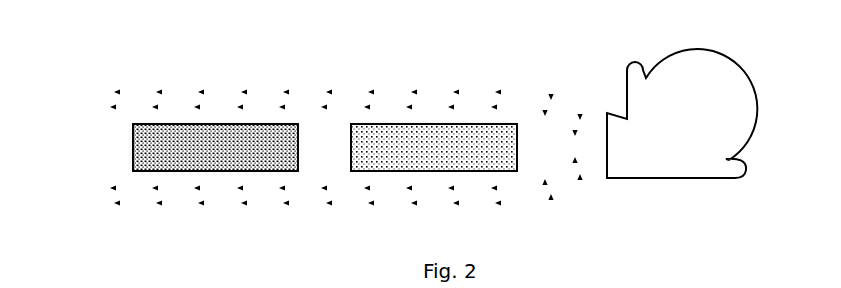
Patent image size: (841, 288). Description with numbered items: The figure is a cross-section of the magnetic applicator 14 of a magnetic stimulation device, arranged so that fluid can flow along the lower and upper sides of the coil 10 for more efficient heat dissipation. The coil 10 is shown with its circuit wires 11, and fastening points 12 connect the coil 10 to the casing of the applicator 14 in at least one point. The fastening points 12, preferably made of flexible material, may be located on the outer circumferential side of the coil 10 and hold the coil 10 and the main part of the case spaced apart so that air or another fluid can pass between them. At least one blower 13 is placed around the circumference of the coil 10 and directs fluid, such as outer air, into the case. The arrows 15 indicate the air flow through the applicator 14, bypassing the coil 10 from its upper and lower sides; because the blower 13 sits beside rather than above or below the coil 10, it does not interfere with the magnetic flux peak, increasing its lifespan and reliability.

The coil 10 is at (220, 173).
The circuit wires 11 is at (362, 133).
The fastening points 12 is at (85, 145).
The blower 13 is at (743, 120).
The applicator 14 is at (216, 80).
The arrows 15 is at (458, 92).